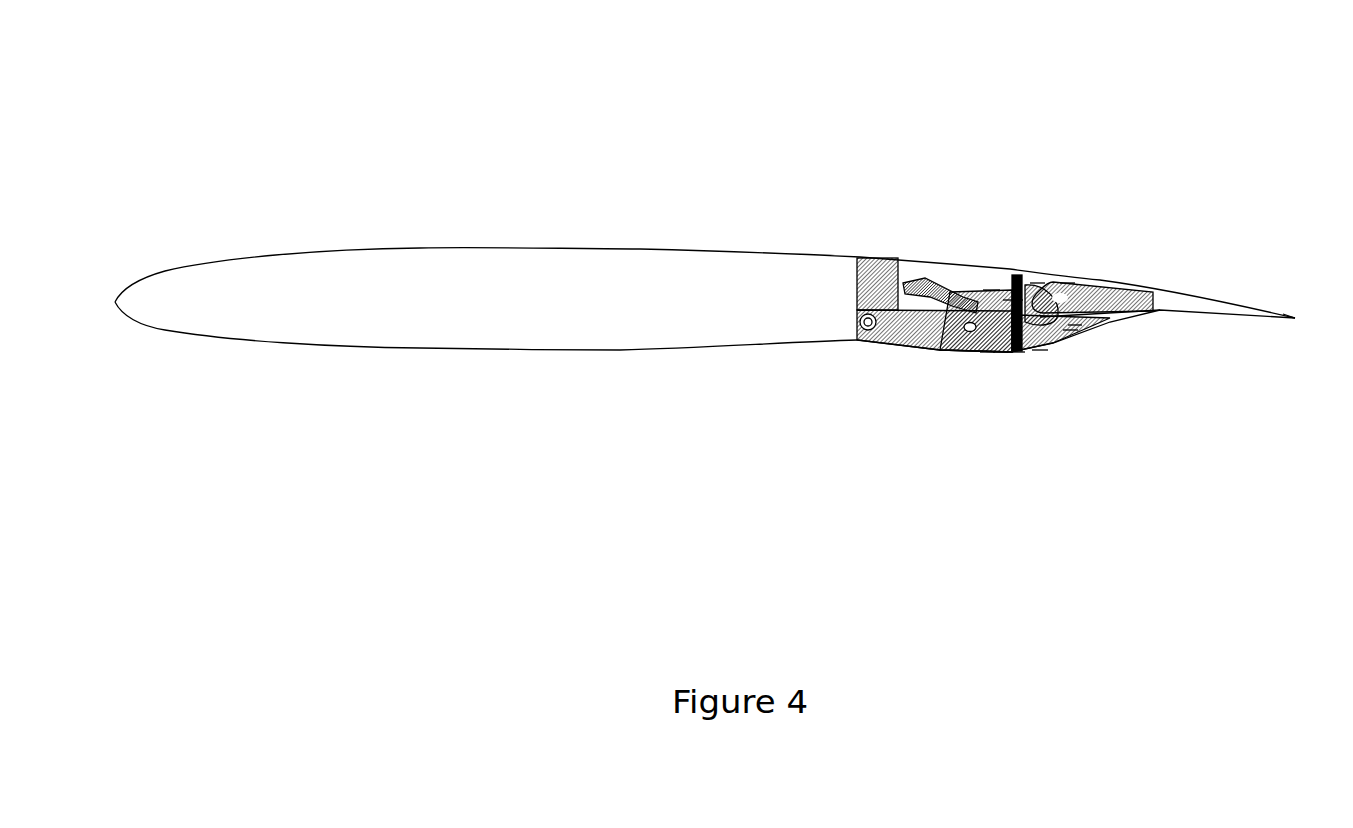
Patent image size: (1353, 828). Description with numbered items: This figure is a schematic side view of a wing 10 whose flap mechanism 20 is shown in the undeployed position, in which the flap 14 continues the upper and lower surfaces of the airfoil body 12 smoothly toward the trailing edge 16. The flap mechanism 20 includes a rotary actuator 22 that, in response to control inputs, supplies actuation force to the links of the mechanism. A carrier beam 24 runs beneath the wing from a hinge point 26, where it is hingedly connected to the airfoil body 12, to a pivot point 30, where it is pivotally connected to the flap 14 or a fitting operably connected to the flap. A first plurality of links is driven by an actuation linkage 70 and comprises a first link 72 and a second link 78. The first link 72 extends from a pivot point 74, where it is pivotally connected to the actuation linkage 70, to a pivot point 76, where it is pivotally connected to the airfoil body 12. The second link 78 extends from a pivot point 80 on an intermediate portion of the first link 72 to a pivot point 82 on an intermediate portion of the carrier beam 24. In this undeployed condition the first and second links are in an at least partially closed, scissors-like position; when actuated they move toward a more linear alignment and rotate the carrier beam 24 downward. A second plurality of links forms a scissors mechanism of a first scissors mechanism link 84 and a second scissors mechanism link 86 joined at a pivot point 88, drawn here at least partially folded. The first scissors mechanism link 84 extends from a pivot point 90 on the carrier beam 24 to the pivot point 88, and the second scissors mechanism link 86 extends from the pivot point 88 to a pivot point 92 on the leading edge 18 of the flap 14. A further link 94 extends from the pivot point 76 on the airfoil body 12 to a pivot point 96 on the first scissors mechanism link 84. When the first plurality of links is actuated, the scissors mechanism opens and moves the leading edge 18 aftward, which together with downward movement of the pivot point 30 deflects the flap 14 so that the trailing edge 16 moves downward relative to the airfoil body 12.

The wing 10 is at (786, 104).
The airfoil body 12 is at (657, 258).
The flap 14 is at (1125, 285).
The trailing edge 16 is at (1283, 310).
The leading edge of the flap 18 is at (1068, 283).
The flap mechanism 20 is at (983, 205).
The actuator 22 is at (862, 259).
The carrier beam 24 is at (935, 342).
The hinge point 26 is at (860, 335).
The pivot point 30 is at (1130, 300).
The actuation linkage 70 is at (905, 282).
The first link 72 is at (1003, 310).
The pivot point 74 is at (962, 315).
The pivot point 76 is at (1030, 308).
The second link 78 is at (990, 330).
The pivot point 80 is at (983, 290).
The pivot point 82 is at (1040, 283).
The first scissors mechanism link 84 is at (1000, 357).
The second scissors mechanism link 86 is at (1075, 325).
The pivot point 88 is at (1040, 352).
The pivot point 90 is at (987, 355).
The pivot point 92 is at (1070, 330).
The link 94 is at (1032, 300).
The pivot point 96 is at (1017, 357).